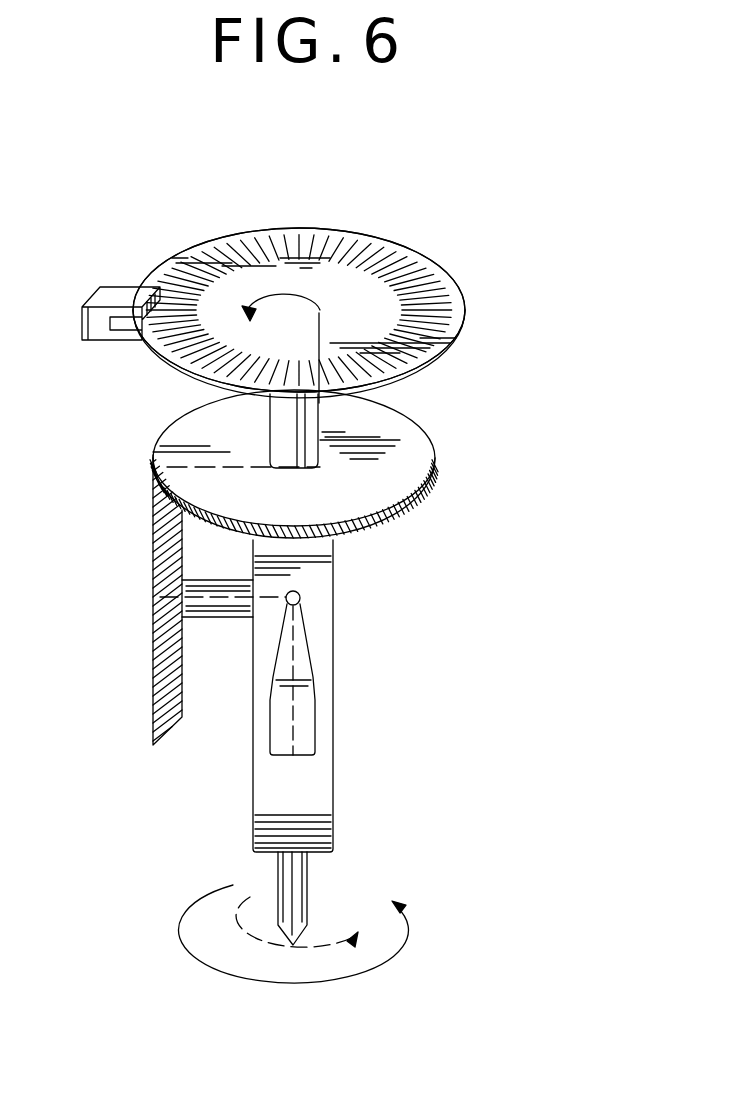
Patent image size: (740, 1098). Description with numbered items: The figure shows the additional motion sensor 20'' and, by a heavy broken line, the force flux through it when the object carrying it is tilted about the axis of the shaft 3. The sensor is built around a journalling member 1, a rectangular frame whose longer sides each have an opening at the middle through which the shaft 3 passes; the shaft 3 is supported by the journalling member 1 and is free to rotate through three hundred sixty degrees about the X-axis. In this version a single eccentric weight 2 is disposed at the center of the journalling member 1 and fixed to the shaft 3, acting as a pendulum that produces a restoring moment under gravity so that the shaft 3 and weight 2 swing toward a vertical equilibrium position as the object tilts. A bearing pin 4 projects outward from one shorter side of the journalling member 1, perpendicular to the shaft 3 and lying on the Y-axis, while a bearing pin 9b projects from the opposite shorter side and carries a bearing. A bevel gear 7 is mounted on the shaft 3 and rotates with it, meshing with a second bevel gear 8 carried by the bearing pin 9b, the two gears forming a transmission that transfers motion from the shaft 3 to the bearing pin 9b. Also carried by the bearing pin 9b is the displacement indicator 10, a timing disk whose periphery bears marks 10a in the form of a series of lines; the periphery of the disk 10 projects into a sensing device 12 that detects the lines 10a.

The motion sensor 20'' is at (291, 276).
The displacement indicator 10 is at (422, 265).
The marks 10a is at (187, 353).
The sensing device 12 is at (110, 293).
The second bevel gear 8 is at (420, 435).
The bearing pin 9b is at (290, 432).
The bevel gear 7 is at (162, 622).
The shaft 3 is at (216, 608).
The journalling member 1 is at (327, 632).
The eccentric weight 2 is at (305, 735).
The bearing pin 4 is at (295, 905).